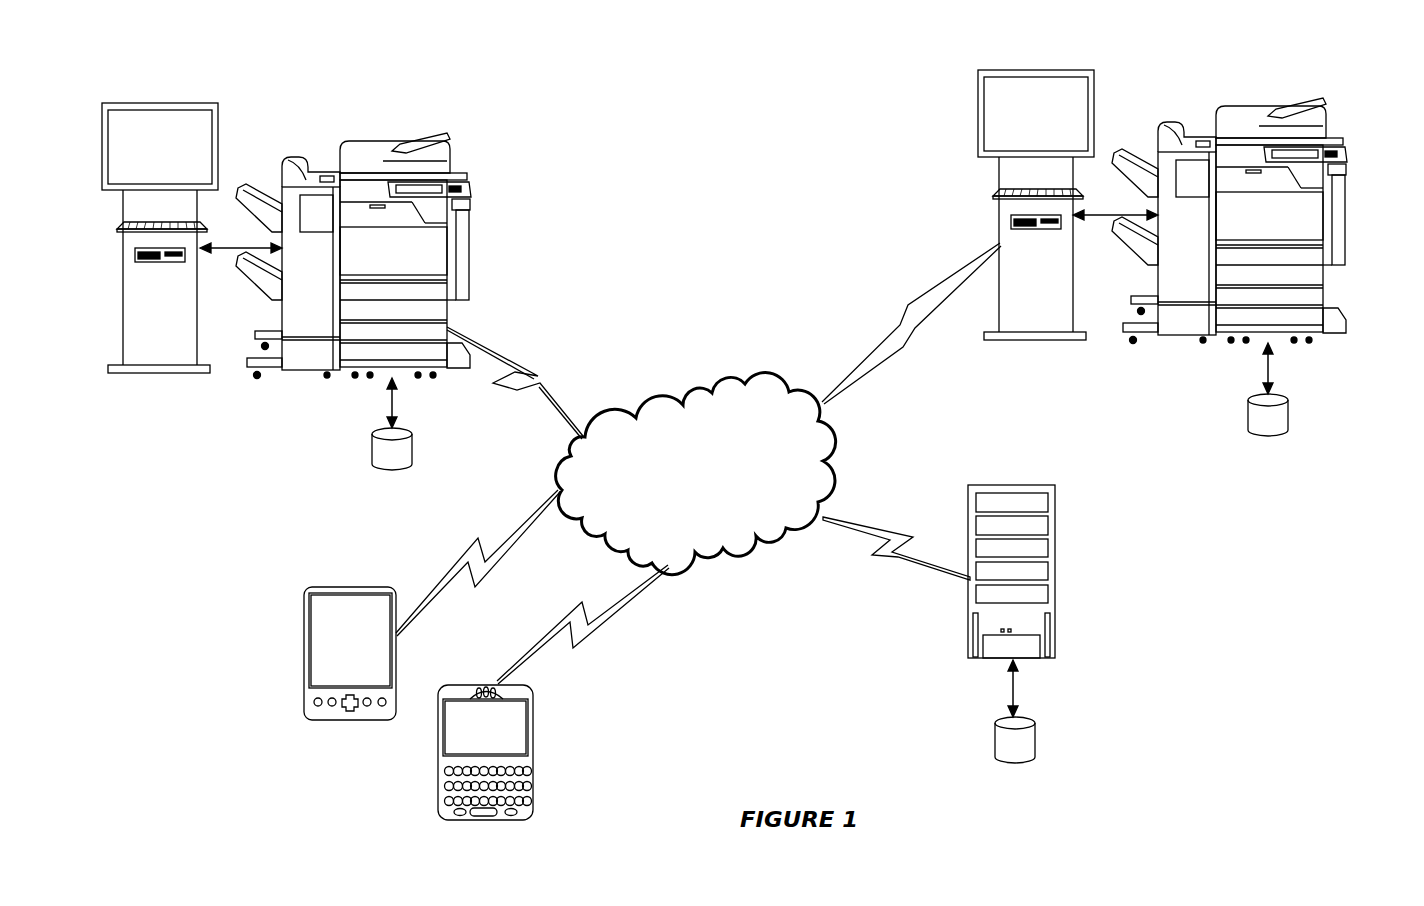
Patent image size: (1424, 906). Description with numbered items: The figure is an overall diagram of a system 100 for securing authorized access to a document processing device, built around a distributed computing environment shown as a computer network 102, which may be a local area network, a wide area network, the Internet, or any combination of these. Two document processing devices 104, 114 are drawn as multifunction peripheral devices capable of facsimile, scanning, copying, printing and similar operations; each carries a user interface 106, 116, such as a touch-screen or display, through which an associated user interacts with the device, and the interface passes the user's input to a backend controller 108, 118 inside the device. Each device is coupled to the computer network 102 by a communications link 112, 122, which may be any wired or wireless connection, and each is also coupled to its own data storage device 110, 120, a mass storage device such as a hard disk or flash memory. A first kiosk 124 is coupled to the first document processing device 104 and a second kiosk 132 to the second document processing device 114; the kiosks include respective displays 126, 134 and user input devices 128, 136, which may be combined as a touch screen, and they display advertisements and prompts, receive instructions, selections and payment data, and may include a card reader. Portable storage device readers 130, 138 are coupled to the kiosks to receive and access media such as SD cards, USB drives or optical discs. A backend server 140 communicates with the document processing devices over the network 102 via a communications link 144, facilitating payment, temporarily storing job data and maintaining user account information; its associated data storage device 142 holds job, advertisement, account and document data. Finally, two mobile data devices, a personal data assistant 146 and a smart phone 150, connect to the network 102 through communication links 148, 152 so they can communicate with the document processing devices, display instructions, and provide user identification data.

The system 100 is at (707, 82).
The computer network 102 is at (748, 359).
The document processing device 104 is at (402, 142).
The user interface 106 is at (471, 186).
The controller 108 is at (448, 268).
The data storage device 110 is at (413, 440).
The communications link 112 is at (527, 369).
The document processing device 114 is at (1276, 108).
The user interface 116 is at (1348, 152).
The controller 118 is at (1326, 233).
The data storage device 120 is at (1289, 406).
The communications link 122 is at (905, 348).
The first kiosk 124 is at (136, 97).
The display 126 is at (204, 166).
The user input device 128 is at (121, 222).
The portable storage device reader 130 is at (137, 255).
The second kiosk 132 is at (1012, 64).
The display 134 is at (1076, 130).
The user input device 136 is at (1000, 190).
The portable storage device reader 138 is at (1011, 221).
The backend server 140 is at (1056, 487).
The data storage device 142 is at (1036, 724).
The communications link 144 is at (893, 530).
The personal data assistant 146 is at (305, 600).
The communication link 148 is at (460, 565).
The smart phone 150 is at (534, 722).
The communication link 152 is at (589, 626).